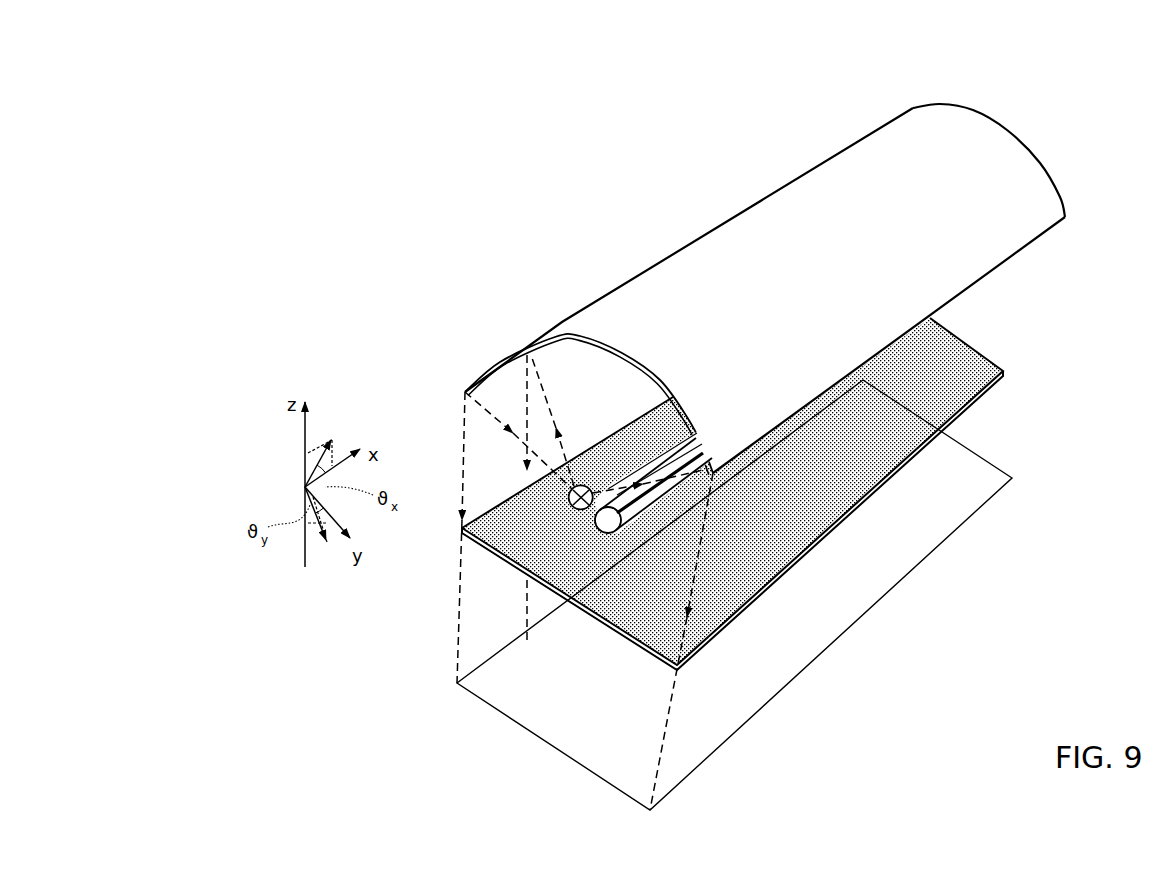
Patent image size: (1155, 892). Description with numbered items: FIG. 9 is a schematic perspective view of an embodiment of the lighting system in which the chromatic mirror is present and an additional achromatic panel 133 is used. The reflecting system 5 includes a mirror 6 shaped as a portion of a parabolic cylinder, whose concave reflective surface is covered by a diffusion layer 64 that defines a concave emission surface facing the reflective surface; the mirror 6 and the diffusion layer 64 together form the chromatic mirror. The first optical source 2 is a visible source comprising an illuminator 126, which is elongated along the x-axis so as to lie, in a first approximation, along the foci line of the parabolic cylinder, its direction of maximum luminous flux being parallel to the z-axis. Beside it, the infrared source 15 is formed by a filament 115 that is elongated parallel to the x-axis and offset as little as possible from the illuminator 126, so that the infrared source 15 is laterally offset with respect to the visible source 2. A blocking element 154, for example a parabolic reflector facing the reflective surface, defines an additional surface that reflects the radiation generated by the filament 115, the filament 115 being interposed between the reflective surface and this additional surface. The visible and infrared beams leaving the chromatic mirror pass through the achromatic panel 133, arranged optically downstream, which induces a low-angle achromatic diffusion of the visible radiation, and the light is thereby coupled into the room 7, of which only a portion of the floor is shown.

The reflecting system 5 is at (847, 122).
The mirror 6 is at (708, 255).
The diffusion layer 64 is at (585, 340).
The filament 115 is at (712, 438).
The achromatic panel 133 is at (988, 350).
The room 7 is at (1010, 434).
The first optical source 2 is at (553, 503).
The illuminator 126 is at (586, 524).
The infrared source 15 is at (600, 518).
The blocking element 154 is at (530, 580).